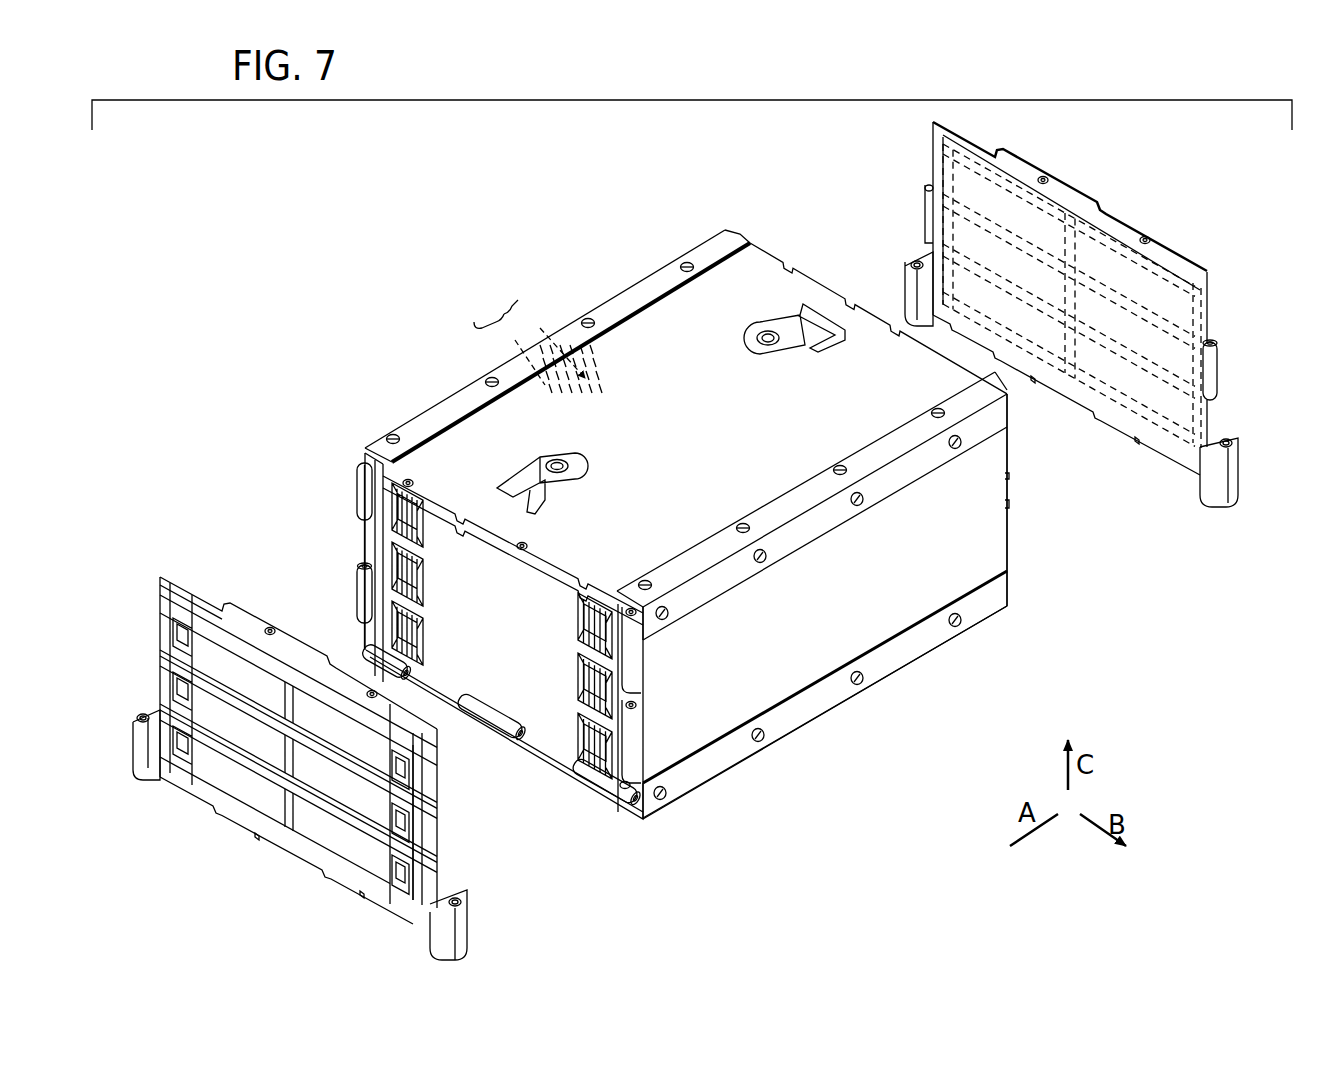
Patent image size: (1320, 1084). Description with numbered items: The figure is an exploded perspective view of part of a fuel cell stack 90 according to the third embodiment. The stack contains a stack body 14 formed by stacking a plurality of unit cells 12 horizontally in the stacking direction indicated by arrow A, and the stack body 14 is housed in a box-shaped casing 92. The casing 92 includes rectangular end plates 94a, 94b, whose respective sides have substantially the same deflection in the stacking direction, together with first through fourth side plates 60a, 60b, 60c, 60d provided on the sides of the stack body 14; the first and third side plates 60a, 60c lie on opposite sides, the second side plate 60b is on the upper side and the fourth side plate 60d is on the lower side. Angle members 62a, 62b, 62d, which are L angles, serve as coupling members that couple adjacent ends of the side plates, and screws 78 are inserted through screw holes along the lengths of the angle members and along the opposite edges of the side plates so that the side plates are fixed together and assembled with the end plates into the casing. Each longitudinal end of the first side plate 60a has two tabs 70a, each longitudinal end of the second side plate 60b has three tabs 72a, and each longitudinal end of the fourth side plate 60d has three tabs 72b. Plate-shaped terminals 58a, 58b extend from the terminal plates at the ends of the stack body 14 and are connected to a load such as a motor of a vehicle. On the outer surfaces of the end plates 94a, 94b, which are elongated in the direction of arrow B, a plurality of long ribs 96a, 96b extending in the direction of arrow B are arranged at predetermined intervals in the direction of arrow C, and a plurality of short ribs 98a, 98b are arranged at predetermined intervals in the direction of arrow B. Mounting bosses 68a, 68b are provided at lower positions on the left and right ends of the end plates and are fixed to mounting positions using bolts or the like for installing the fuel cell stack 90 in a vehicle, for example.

The fuel cell stack 90 is at (348, 304).
The stack body 14 is at (492, 303).
The unit cells 12 is at (544, 349).
The casing 92 is at (456, 377).
The first side plate 60a is at (980, 500).
The second side plate 60b is at (720, 290).
The third side plate 60c is at (418, 444).
The fourth side plate 60d is at (542, 732).
The angle member 62a is at (766, 505).
The angle member 62b is at (640, 292).
The angle member 62d is at (910, 646).
The screws 78 is at (588, 320).
The terminal 58a is at (538, 466).
The terminal 58b is at (784, 326).
The tabs 72a is at (856, 309).
The tabs 72b is at (502, 714).
The tabs 70a is at (640, 648).
The end plate 94a is at (160, 582).
The end plate 94b is at (1212, 270).
The long ribs 96a is at (310, 683).
The long ribs 96b is at (1076, 206).
The short ribs 98a is at (163, 696).
The short ribs 98b is at (1088, 394).
The mounting bosses 68a is at (458, 936).
The mounting bosses 68b is at (1238, 470).